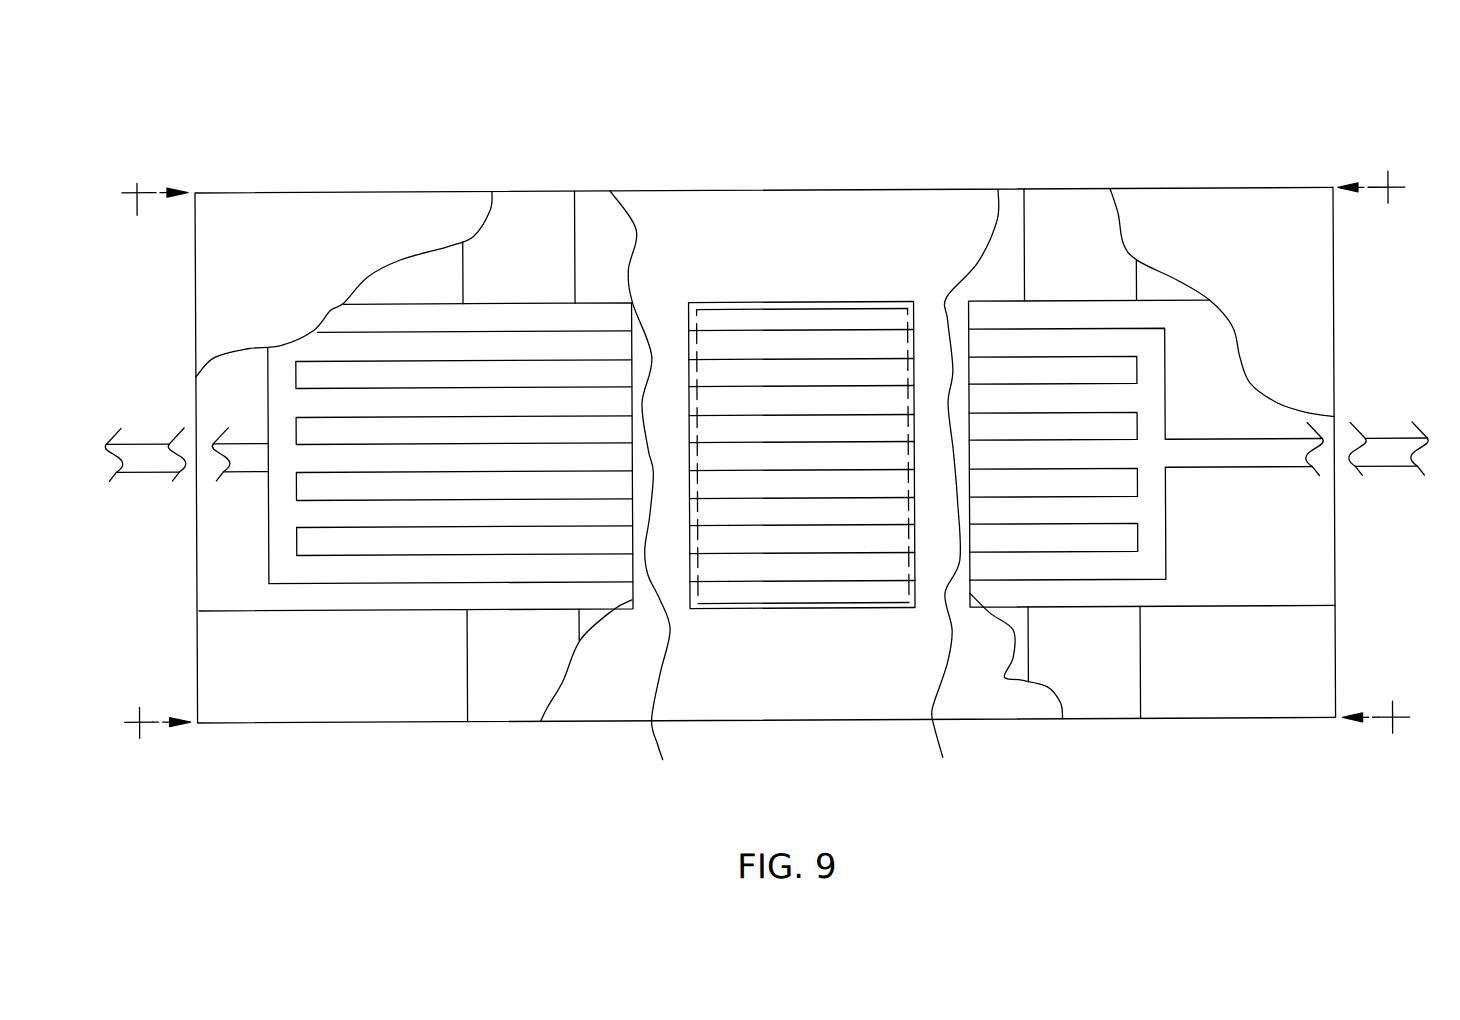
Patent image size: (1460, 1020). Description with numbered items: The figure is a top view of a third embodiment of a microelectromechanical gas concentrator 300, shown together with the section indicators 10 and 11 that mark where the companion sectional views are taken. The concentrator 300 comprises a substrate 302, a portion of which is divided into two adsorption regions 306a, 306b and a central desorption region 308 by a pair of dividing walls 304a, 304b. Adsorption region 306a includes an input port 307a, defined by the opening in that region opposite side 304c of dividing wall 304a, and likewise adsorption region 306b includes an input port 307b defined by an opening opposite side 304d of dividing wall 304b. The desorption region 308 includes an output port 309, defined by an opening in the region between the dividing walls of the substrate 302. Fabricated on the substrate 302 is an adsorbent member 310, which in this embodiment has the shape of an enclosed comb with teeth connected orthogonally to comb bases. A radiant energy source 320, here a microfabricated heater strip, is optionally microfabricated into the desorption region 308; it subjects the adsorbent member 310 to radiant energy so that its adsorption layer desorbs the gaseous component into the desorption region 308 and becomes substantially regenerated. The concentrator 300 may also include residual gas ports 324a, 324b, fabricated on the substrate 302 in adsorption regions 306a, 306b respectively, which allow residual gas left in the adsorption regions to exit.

The microelectromechanical gas concentrator 300 is at (318, 117).
The substrate 302 is at (665, 213).
The dividing wall 304a is at (959, 497).
The dividing wall 304b is at (655, 499).
The side of dividing wall 304c is at (956, 584).
The side of dividing wall 304d is at (645, 583).
The adsorption region 306a is at (1287, 582).
The adsorption region 306b is at (240, 578).
The input port 307a is at (1333, 365).
The input port 307b is at (197, 348).
The desorption region 308 is at (878, 305).
The output port 309 is at (796, 305).
The adsorbent member 310 is at (282, 523).
The radiant energy source 320 is at (783, 595).
The residual gas port 324a is at (1073, 225).
The residual gas port 324b is at (511, 219).
The section line 10- 10 is at (1391, 452).
The section line 11- 11 is at (141, 458).